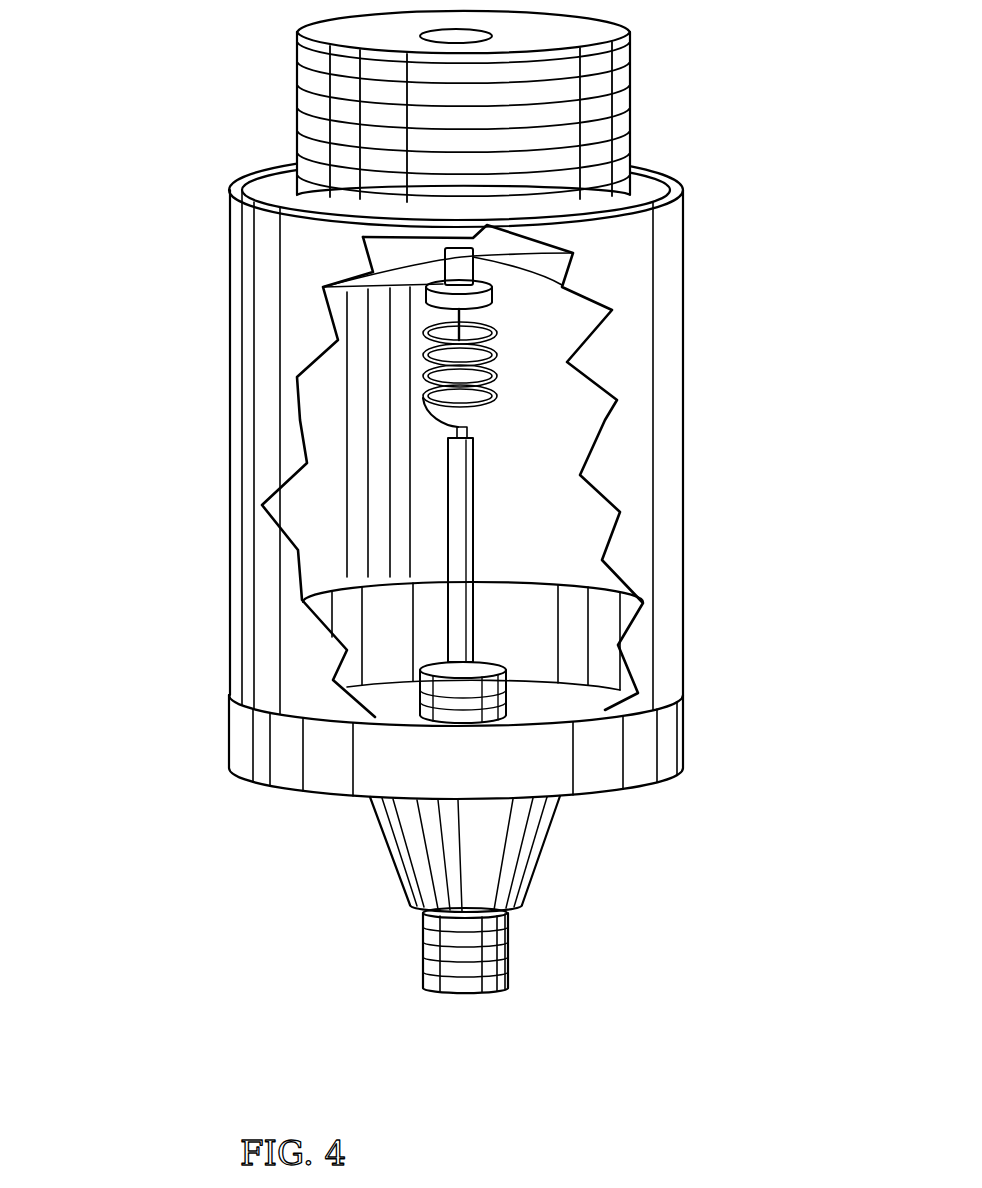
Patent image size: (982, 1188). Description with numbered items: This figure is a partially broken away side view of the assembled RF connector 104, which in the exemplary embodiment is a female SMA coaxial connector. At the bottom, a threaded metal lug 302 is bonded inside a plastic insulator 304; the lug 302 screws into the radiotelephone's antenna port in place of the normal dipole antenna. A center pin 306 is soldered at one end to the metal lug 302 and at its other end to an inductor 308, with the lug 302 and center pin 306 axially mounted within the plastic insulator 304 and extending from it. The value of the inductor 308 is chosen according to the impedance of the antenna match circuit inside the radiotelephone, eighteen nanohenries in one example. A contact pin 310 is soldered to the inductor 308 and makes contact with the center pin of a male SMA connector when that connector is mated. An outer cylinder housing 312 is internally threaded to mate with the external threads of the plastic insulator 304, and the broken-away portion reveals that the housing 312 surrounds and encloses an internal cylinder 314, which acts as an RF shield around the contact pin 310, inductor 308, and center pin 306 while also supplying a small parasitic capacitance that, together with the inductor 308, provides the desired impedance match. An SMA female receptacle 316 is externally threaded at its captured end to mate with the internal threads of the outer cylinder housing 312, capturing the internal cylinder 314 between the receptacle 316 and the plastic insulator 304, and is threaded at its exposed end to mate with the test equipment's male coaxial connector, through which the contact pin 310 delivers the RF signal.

The connector 104 is at (462, 502).
The threaded metal lug 302 is at (510, 960).
The plastic insulator 304 is at (684, 735).
The center pin 306 is at (463, 527).
The inductor 308 is at (427, 373).
The contact pin 310 is at (462, 268).
The outer cylinder housing 312 is at (682, 422).
The internal cylinder 314 is at (303, 503).
The SMA female receptacle 316 is at (632, 101).